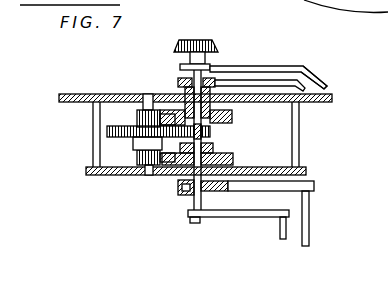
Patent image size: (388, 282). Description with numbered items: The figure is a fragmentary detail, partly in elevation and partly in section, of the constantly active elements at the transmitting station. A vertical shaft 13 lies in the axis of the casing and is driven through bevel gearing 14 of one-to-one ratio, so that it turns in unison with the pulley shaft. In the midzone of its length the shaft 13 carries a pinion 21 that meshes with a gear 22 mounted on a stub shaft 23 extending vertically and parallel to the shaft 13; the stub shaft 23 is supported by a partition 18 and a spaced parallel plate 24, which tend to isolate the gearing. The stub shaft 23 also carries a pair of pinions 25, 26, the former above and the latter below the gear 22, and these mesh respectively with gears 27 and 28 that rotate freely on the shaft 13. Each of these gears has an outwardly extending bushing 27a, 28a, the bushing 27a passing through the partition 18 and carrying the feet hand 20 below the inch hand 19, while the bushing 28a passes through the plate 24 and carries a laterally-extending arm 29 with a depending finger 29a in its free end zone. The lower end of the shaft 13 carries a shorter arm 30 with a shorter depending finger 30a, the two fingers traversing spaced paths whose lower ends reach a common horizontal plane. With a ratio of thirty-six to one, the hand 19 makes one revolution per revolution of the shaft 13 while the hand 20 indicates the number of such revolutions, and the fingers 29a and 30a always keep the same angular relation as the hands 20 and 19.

The vertical downwardly extending shaft 13 is at (193, 203).
The bevel gearing 14 is at (214, 46).
The partition 18 is at (77, 94).
The inch hand 19 is at (300, 66).
The feet hand 20 is at (327, 88).
The pinion 21 is at (204, 133).
The gear 22 is at (107, 132).
The stub shaft 23 is at (147, 93).
The plate 24 is at (87, 172).
The pinion 25 is at (137, 114).
The pinion 26 is at (137, 155).
The gear 27 is at (236, 117).
The bushing 27a is at (204, 80).
The gear 28 is at (234, 158).
The bushing 28a is at (207, 195).
The laterally-extending arm 29 is at (314, 190).
The depending finger 29a is at (310, 206).
The arm 30 is at (183, 216).
The depending finger 30a is at (281, 236).